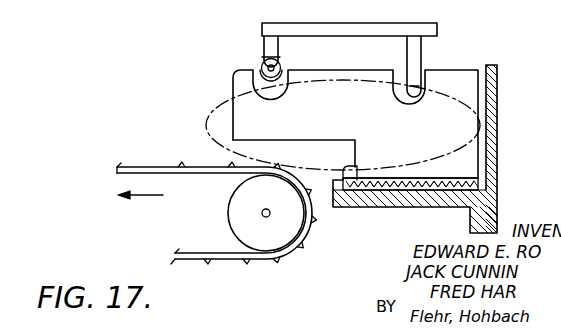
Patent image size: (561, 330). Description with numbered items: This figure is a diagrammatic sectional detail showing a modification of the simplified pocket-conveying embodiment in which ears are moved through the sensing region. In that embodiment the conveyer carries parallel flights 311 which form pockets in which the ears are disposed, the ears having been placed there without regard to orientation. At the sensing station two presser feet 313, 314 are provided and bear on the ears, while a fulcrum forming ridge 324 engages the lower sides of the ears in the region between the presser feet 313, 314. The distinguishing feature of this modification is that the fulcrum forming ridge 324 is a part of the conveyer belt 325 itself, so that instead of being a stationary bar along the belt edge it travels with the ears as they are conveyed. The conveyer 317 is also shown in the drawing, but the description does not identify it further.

The parallel flights 311 is at (465, 90).
The presser foot 313 is at (264, 50).
The presser foot 314 is at (414, 57).
The conveyor belt 317 is at (156, 167).
The fulcrum forming ridge 324 is at (352, 178).
The conveyer belt 325 is at (370, 209).